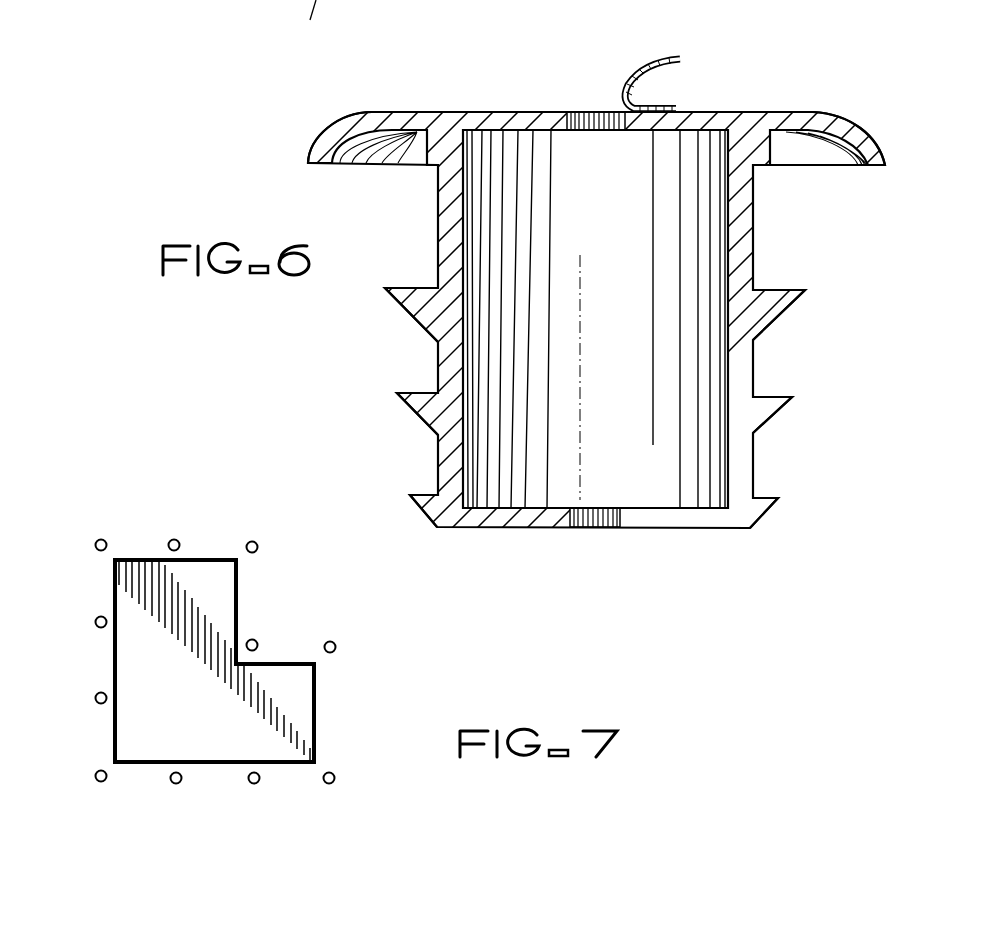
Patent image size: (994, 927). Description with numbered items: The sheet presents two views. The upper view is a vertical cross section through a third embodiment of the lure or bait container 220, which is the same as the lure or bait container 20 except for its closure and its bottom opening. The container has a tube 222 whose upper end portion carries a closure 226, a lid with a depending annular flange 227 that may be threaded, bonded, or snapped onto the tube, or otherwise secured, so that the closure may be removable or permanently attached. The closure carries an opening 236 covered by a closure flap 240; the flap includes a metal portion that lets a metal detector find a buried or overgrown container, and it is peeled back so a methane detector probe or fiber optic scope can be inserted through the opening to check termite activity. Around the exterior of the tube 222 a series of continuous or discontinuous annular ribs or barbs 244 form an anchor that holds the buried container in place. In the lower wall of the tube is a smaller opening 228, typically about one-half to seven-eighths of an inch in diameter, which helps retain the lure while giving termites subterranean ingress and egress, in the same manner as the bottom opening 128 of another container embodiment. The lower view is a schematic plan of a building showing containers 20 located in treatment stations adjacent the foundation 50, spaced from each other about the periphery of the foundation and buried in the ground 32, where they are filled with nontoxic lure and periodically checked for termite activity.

In FIG. 6, the lure or bait container 220 is at (772, 74).
In FIG. 6, the tube 222 is at (774, 242).
In FIG. 6, the closure 226 is at (405, 110).
In FIG. 6, the annular flange 227 is at (415, 145).
In FIG. 6, the opening 236 is at (602, 112).
In FIG. 6, the closure flap 240 is at (657, 60).
In FIG. 6, the annular ribs or barbs 244 is at (418, 322).
In FIG. 6, the opening 228 is at (597, 528).
In FIG. 6, the opening 128 is at (310, 20).
In FIG. 7, the lure or bait container 20 is at (168, 542).
In FIG. 7, the ground 32 is at (397, 629).
In FIG. 7, the foundation 50 is at (320, 720).